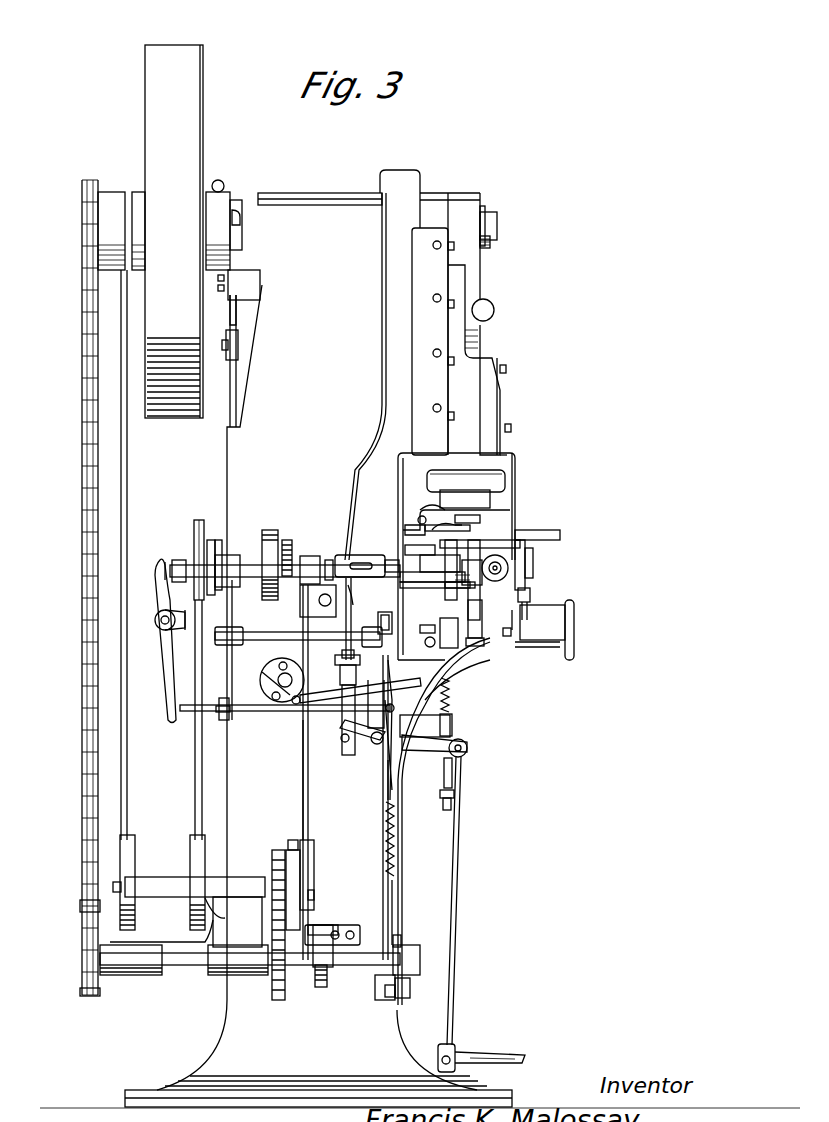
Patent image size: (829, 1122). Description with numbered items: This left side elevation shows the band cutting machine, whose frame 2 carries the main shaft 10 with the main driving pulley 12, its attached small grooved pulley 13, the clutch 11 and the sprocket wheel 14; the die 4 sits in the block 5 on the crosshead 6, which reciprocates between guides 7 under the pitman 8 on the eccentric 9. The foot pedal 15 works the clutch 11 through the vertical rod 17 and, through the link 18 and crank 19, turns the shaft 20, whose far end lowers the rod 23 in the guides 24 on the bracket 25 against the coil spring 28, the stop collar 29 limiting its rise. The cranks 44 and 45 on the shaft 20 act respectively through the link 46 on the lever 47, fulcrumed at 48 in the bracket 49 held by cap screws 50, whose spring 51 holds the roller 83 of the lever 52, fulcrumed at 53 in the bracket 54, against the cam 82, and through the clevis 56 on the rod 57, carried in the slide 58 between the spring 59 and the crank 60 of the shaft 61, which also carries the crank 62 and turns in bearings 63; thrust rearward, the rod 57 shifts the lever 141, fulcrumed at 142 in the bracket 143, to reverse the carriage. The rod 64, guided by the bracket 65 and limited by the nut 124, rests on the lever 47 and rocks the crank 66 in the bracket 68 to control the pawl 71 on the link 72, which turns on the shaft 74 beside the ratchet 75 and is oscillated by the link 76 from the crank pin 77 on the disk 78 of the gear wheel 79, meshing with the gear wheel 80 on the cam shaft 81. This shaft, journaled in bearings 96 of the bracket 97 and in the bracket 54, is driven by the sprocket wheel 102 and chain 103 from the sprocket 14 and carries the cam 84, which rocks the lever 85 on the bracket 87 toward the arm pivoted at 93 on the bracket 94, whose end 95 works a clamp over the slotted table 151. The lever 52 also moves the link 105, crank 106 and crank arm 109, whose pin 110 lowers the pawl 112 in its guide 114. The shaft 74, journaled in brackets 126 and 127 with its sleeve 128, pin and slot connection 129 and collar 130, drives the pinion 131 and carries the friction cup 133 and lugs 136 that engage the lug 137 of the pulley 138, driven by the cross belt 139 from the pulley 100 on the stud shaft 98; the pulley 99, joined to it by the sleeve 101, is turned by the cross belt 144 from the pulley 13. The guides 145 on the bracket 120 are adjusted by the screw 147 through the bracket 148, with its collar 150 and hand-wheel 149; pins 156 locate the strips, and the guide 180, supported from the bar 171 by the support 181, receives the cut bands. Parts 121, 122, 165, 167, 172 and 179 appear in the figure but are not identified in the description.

The frame 2 is at (200, 1080).
The plate 4 is at (492, 500).
The housing 5 is at (515, 462).
The bracket 6 is at (492, 407).
The plate 7 is at (425, 380).
The knob 8 is at (480, 337).
The nut 9 is at (490, 247).
The stud 10 is at (497, 226).
The bearing bracket 11 is at (230, 205).
The column 12 is at (204, 122).
The pulley 13 is at (124, 192).
The chain 14 is at (90, 182).
The pedal 15 is at (478, 1058).
The guide 17 is at (236, 416).
The rod 18 is at (457, 867).
The lever 19 is at (425, 752).
The link 20 is at (380, 752).
The nut 23 is at (447, 808).
The pivot 24 is at (452, 718).
The block 25 is at (425, 726).
The spring 28 is at (452, 692).
The collar 29 is at (444, 800).
The pivot 44 is at (356, 736).
The link 45 is at (372, 726).
The bar 46 is at (346, 717).
The arm 47 is at (328, 685).
The hub 48 is at (282, 678).
The disc 49 is at (268, 688).
The pin 50 is at (284, 664).
The spring 51 is at (398, 855).
The block 52 is at (385, 995).
The block 53 is at (410, 988).
The bracket 54 is at (410, 950).
The pin 56 is at (388, 707).
The rod 57 is at (255, 712).
The collar 58 is at (226, 712).
The collar 59 is at (226, 704).
The rod 60 is at (230, 676).
The rod 61 is at (272, 636).
The block 62 is at (388, 615).
The collar 63 is at (220, 645).
The rod 64 is at (348, 630).
The fitting 65 is at (342, 658).
The link 66 is at (350, 608).
The block 68 is at (318, 607).
The rod 71 is at (300, 602).
The collar 72 is at (308, 558).
The collar 74 is at (330, 560).
The gear 75 is at (288, 540).
The rod 76 is at (303, 762).
The bracket 77 is at (312, 895).
The pin 78 is at (290, 848).
The gear 79 is at (286, 862).
The gear 80 is at (280, 1000).
The shaft 81 is at (190, 967).
The pin 82 is at (400, 940).
The pin 83 is at (396, 1000).
The hub 84 is at (320, 985).
The bracket 85 is at (318, 928).
The plate 87 is at (345, 928).
The pin 93 is at (418, 518).
The block 94 is at (418, 522).
The arm 95 is at (440, 512).
The bearing 96 is at (140, 975).
The bracket 97 is at (230, 928).
The nut 98 is at (118, 886).
The pulley 99 is at (133, 858).
The link 100 is at (205, 900).
The bar 101 is at (165, 878).
The chain end 102 is at (88, 996).
The chain 103 is at (84, 905).
The rod 105 is at (386, 790).
The pin 106 is at (385, 612).
The screw 109 is at (444, 645).
The block 110 is at (475, 625).
The collar 112 is at (474, 640).
The gear 114 is at (470, 588).
The tube 120 is at (460, 670).
The disc 121 is at (510, 570).
The rod 122 is at (535, 595).
The pin 124 is at (353, 660).
The shaft 126 is at (178, 566).
The bar 127 is at (418, 578).
The bar 128 is at (345, 555).
The slot 129 is at (365, 565).
The block 130 is at (405, 572).
The rod 131 is at (465, 565).
The gear 133 is at (268, 532).
The collar 136 is at (225, 558).
The disc 137 is at (212, 540).
The pulley 138 is at (195, 545).
The belt 139 is at (181, 720).
The lever 141 is at (160, 595).
The pivot 142 is at (160, 625).
The link 143 is at (185, 636).
The belt 144 is at (129, 478).
The plate 145 is at (542, 530).
The tube 147 is at (505, 640).
The cylinder 148 is at (547, 642).
The disc 149 is at (570, 640).
The rod 150 is at (520, 640).
The bar 151 is at (490, 544).
The arm 156 is at (468, 522).
The block 165 is at (425, 545).
The bracket 167 is at (385, 556).
The nut 171 is at (528, 562).
The bar 172 is at (530, 548).
The plate 179 is at (478, 512).
The slot 180 is at (468, 488).
The wall 181 is at (515, 505).